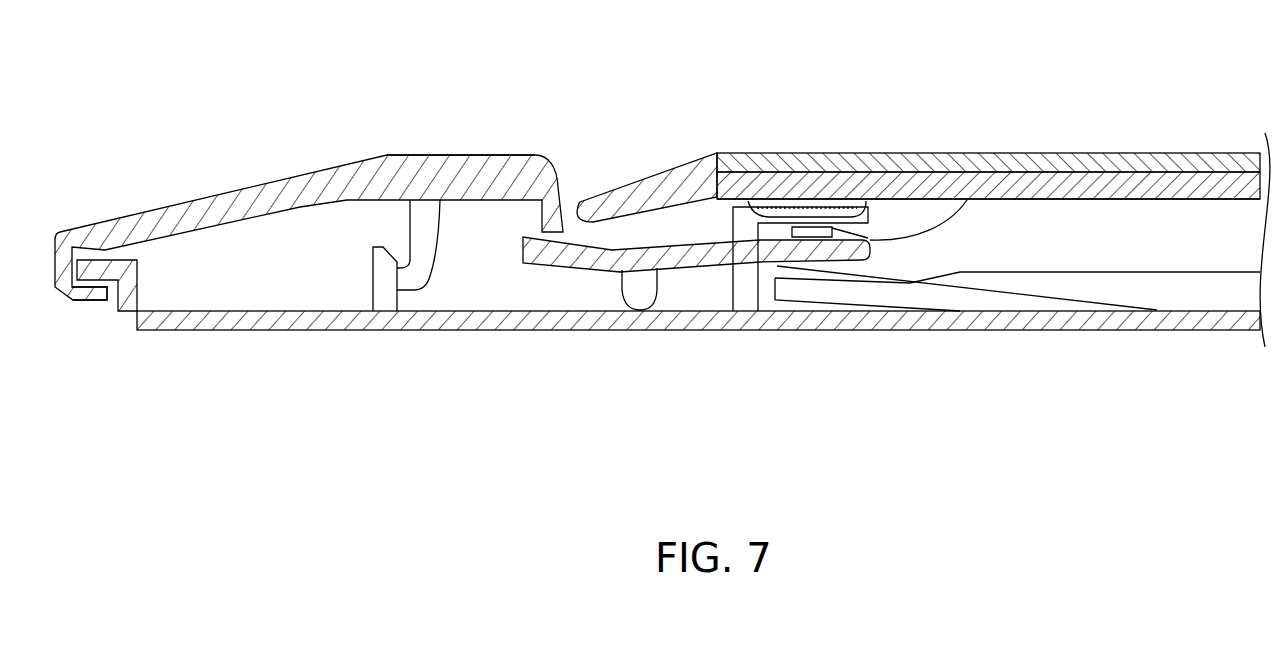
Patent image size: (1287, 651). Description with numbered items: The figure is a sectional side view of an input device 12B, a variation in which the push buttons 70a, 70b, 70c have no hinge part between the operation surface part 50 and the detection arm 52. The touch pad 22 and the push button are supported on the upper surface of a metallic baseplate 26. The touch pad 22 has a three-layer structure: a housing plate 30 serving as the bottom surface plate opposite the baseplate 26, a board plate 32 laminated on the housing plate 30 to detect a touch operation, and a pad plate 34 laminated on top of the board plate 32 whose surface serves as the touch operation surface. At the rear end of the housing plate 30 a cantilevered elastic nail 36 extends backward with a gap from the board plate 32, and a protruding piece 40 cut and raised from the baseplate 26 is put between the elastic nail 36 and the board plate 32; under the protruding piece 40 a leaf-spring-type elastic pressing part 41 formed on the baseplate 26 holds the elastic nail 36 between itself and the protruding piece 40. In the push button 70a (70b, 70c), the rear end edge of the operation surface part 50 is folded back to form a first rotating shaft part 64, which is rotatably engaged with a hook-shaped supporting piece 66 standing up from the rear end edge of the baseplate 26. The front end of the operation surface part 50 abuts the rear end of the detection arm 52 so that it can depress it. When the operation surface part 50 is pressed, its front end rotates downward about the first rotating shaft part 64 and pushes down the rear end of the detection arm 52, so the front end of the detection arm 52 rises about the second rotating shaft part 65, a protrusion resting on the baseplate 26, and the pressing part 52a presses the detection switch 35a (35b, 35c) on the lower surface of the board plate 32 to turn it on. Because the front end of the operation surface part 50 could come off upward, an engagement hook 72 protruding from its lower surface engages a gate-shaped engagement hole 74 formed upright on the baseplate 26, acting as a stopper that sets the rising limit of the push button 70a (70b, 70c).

The input device 12B is at (163, 83).
The touch pad 22 is at (995, 148).
The baseplate 26 is at (272, 338).
The housing plate 30 is at (1070, 223).
The board plate 32 is at (1128, 180).
The pad plate 34 is at (1190, 160).
The detection switch 35a is at (775, 243).
The detection switch 35b is at (815, 251).
The detection switch 35c is at (815, 251).
The elastic nail 36 is at (907, 257).
The protruding piece 40 is at (864, 212).
The elastic pressing part 41 is at (843, 293).
The operation surface part 50 is at (440, 155).
The detection arm 52 is at (703, 263).
The pressing part 52a is at (810, 226).
The first rotating shaft part 64 is at (68, 312).
The second rotating shaft part 65 is at (638, 298).
The hook-shaped supporting piece 66 is at (98, 303).
The push button 70a is at (297, 172).
The push button 70b is at (309, 227).
The push button 70c is at (309, 227).
The engagement hook 72 is at (398, 288).
The engagement hole 74 is at (381, 258).